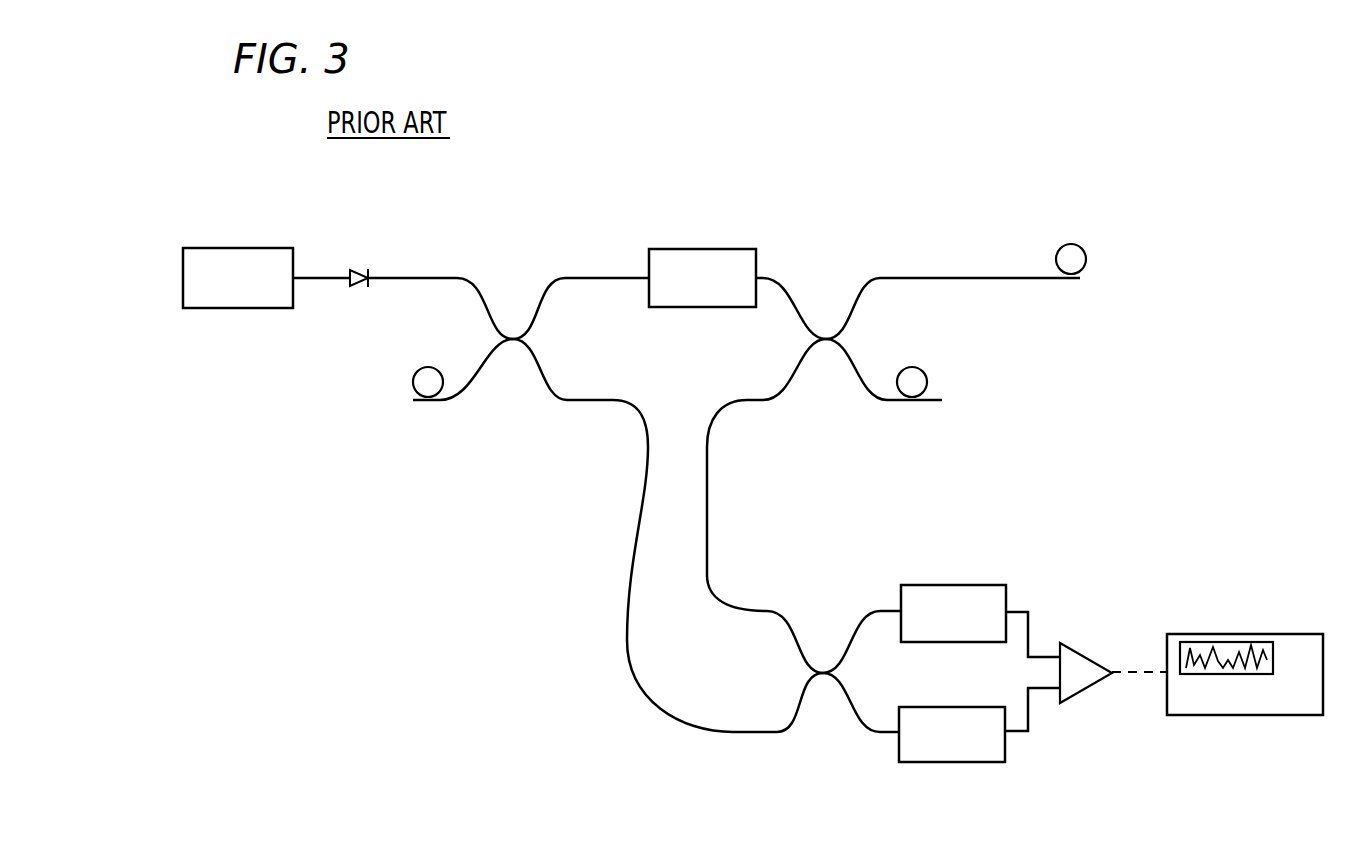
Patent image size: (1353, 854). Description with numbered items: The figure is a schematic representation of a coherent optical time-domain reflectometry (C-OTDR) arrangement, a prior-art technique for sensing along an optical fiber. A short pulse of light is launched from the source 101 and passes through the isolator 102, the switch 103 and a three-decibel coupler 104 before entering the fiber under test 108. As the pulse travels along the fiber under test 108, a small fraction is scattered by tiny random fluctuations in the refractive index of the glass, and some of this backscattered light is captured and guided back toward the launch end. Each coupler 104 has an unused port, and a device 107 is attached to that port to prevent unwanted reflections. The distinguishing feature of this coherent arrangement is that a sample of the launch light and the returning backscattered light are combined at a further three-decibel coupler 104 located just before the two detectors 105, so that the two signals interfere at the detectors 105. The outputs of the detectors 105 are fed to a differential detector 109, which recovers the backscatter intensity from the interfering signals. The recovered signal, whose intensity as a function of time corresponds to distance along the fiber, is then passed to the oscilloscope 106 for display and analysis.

The source 101 is at (235, 248).
The isolator 102 is at (368, 265).
The switch 103 is at (703, 249).
The 3 dB coupler 104 is at (513, 337).
The detector 105 is at (958, 585).
The oscilloscope 106 is at (1263, 715).
The device to prevent unwanted reflection 107 is at (427, 405).
The fiber under test (FUT) 108 is at (1023, 240).
The differential detector 109 is at (1087, 660).